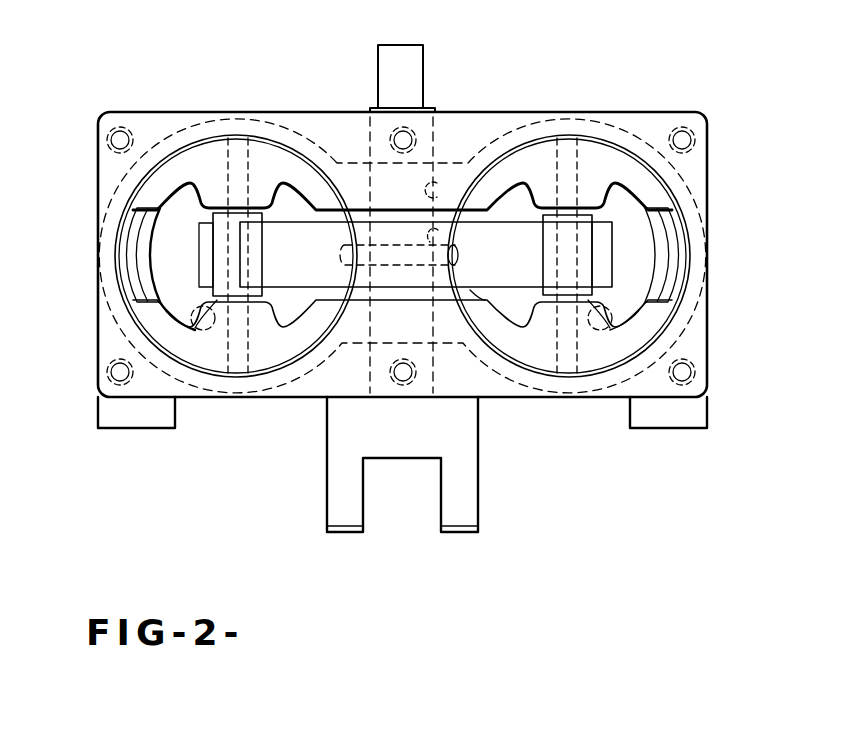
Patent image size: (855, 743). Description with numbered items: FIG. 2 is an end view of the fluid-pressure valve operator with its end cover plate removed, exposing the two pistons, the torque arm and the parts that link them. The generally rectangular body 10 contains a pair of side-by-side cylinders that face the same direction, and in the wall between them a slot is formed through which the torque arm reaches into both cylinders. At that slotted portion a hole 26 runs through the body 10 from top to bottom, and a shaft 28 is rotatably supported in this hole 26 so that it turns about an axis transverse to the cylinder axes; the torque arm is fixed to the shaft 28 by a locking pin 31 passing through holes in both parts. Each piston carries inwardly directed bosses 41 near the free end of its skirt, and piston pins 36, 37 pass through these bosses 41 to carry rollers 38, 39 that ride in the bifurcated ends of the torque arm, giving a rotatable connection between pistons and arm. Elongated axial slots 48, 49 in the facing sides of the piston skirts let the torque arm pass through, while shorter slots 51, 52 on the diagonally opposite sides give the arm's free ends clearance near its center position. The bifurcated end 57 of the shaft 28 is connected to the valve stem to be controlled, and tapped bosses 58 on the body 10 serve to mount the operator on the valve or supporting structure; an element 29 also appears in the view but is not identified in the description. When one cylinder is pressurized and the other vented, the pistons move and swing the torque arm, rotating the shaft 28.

The body 10 is at (155, 108).
The hole 26 is at (438, 190).
The shaft 28 is at (410, 71).
The bore 29 is at (438, 237).
The locking pin 31 is at (460, 257).
The piston pin 36 is at (242, 302).
The piston pin 37 is at (567, 300).
The roller 38 is at (220, 258).
The roller 39 is at (594, 218).
The bosses 41 is at (590, 190).
The elongated axial slot 48 is at (322, 218).
The elongated axial slot 49 is at (479, 294).
The slot 51 is at (138, 259).
The slot 52 is at (665, 248).
The bifurcated end 57 is at (458, 497).
The tapped bosses 58 is at (150, 417).